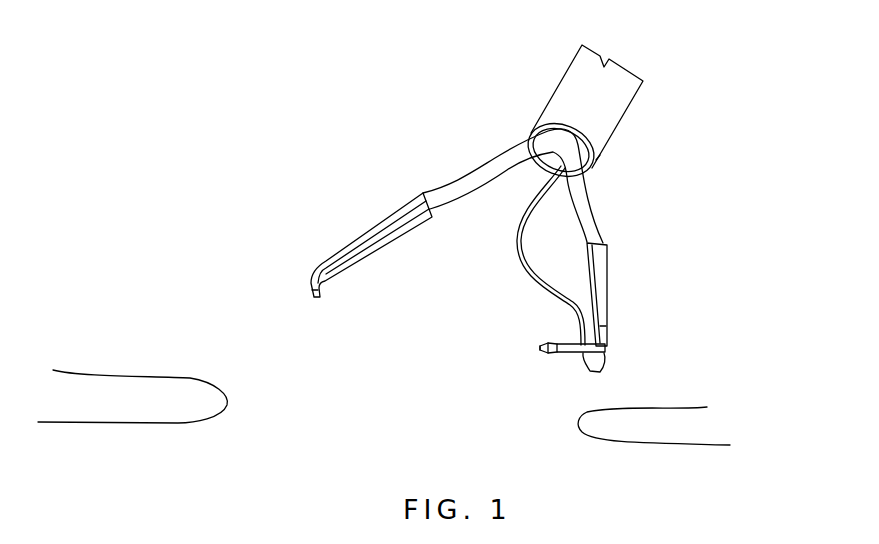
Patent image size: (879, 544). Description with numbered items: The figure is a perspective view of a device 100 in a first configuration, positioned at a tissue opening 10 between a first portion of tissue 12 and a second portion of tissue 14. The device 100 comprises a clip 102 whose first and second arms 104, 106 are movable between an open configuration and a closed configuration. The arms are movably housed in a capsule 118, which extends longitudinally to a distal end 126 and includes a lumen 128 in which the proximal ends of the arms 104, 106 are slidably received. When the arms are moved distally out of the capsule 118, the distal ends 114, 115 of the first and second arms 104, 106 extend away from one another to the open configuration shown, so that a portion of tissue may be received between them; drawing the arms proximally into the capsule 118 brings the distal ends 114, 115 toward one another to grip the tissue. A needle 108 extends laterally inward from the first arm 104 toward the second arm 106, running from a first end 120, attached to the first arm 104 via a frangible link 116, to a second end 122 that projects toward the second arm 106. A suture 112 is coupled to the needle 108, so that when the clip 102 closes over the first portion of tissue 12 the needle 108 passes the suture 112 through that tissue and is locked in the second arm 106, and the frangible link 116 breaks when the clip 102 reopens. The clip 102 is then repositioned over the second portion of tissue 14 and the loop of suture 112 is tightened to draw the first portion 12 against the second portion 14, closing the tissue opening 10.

The device 100 is at (288, 122).
The clip 102 is at (467, 146).
The first arm 104 is at (607, 310).
The second arm 106 is at (350, 241).
The needle 108 is at (559, 353).
The suture 112 is at (519, 275).
The distal end of first arm 114 is at (605, 367).
The distal end of second arm 115 is at (310, 282).
The frangible link 116 is at (605, 330).
The capsule 118 is at (633, 102).
The first end of needle 120 is at (605, 350).
The second end of needle 122 is at (538, 347).
The distal end of capsule 126 is at (600, 145).
The lumen 128 is at (529, 138).
The tissue opening 10 is at (347, 400).
The first portion of tissue 12 is at (147, 388).
The second portion of tissue 14 is at (612, 425).